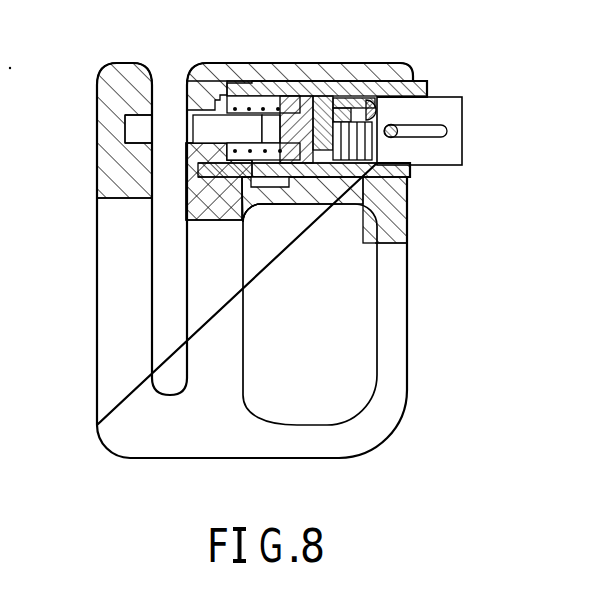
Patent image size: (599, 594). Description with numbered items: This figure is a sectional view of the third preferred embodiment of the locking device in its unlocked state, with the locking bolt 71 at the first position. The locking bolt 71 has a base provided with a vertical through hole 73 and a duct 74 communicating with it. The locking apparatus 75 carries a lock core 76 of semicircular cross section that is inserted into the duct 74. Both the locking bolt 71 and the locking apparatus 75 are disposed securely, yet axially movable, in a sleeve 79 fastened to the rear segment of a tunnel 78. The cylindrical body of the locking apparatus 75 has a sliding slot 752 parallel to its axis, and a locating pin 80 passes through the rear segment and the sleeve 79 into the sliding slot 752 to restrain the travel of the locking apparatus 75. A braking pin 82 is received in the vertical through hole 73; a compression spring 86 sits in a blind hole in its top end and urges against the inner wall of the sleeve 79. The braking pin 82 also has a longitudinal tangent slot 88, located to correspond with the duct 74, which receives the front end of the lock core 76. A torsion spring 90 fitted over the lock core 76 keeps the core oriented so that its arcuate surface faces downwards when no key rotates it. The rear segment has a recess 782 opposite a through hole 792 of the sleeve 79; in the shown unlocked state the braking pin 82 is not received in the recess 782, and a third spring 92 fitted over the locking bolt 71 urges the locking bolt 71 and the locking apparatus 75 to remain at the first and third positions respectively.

The locking bolt 71 is at (271, 123).
The vertical through hole 73 is at (281, 150).
The duct 74 is at (348, 180).
The locking apparatus 75 is at (447, 95).
The lock core 76 is at (363, 213).
The tunnel 78 is at (258, 101).
The sleeve 79 is at (352, 84).
The locating pin 80 is at (398, 137).
The braking pin 82 is at (320, 160).
The compression spring 86 is at (323, 100).
The tangent slot 88 is at (338, 165).
The torsion spring 90 is at (355, 104).
The third spring 92 is at (240, 150).
The sliding slot 752 is at (445, 129).
The recess 782 is at (257, 212).
The through hole 792 is at (238, 190).